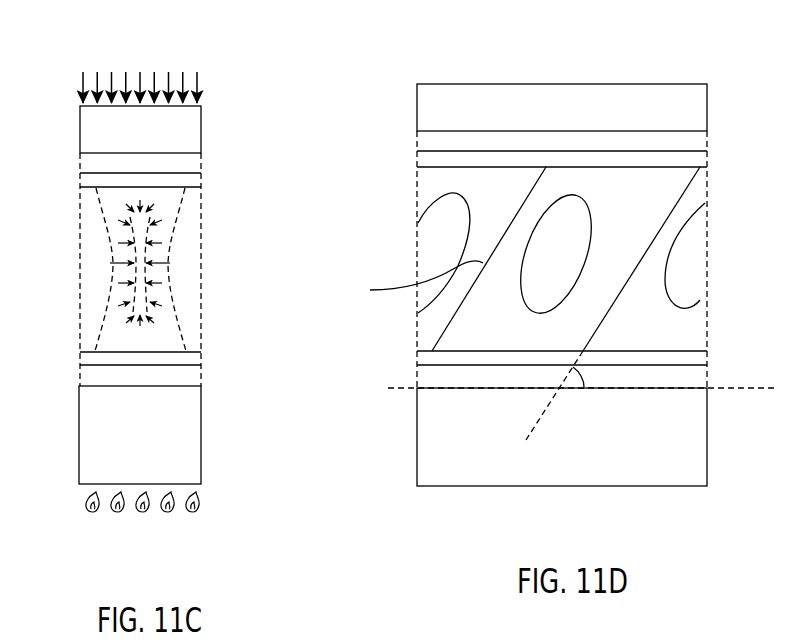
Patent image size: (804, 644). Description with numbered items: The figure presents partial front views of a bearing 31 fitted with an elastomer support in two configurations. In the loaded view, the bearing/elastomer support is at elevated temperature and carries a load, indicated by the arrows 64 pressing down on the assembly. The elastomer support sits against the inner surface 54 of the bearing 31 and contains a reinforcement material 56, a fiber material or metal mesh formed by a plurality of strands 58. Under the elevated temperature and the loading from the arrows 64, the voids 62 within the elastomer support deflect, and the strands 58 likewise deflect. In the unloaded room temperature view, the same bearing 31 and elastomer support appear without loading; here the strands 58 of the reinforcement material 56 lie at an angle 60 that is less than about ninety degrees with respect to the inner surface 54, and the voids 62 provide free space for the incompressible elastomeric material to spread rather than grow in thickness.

In FIG. 11C, the bearing 31 is at (76, 452).
In FIG. 11D, the bearing 31 is at (414, 436).
In FIG. 11C, the inner surface 54 is at (110, 384).
In FIG. 11D, the inner surface 54 is at (463, 388).
In FIG. 11C, the reinforcement material 56 is at (185, 210).
In FIG. 11D, the reinforcement material 56 is at (684, 348).
In FIG. 11C, the strands 58 is at (100, 213).
In FIG. 11D, the strands 58 is at (566, 303).
In FIG. 11D, the angle 60 is at (585, 387).
In FIG. 11C, the voids 62 is at (142, 282).
In FIG. 11D, the voids 62 is at (569, 268).
In FIG. 11C, the arrows 64 is at (200, 99).